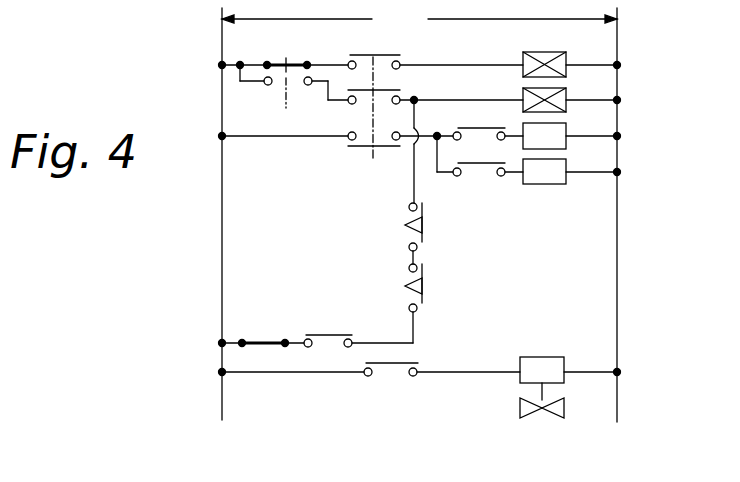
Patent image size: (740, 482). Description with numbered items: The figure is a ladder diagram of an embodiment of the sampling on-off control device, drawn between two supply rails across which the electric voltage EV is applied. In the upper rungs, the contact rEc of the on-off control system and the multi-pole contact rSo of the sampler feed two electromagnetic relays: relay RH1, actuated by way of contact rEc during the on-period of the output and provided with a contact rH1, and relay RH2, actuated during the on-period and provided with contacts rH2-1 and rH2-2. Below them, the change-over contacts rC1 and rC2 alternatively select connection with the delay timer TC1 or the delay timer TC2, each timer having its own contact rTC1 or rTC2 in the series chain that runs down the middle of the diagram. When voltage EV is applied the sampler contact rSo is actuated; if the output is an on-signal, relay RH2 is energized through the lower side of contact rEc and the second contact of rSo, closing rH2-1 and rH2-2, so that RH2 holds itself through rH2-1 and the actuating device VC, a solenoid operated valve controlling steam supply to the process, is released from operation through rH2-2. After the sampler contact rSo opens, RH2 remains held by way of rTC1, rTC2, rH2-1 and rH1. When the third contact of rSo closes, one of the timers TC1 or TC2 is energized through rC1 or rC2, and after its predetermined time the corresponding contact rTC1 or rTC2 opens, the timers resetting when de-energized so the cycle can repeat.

The electric voltage EV is at (419, 18).
The contact of the on-off control system rEc is at (294, 69).
The contact of the sampler rSo is at (374, 93).
The electromagnetic relay RH1 is at (566, 54).
The electromagnetic relay RH2 is at (567, 93).
The delay timer TC1 is at (566, 129).
The delay timer TC2 is at (567, 163).
The change-over contact rC1 is at (479, 121).
The change-over contact rC2 is at (479, 157).
The contact of delay timer rTC1 is at (377, 227).
The contact of delay timer rTC2 is at (377, 288).
The contact of relay RH1 rH1 is at (264, 328).
The contact of relay RH2 rH2-1 is at (342, 327).
The contact of relay RH2 rH2-2 is at (389, 387).
The actuating device VC is at (542, 387).